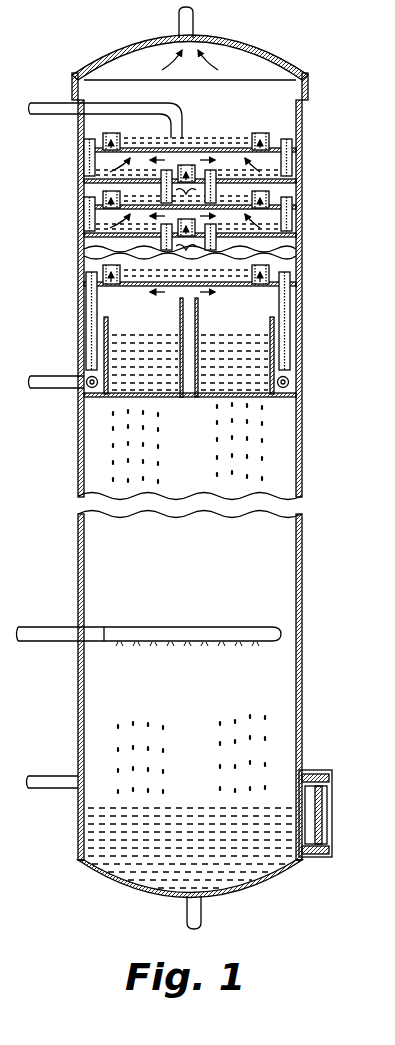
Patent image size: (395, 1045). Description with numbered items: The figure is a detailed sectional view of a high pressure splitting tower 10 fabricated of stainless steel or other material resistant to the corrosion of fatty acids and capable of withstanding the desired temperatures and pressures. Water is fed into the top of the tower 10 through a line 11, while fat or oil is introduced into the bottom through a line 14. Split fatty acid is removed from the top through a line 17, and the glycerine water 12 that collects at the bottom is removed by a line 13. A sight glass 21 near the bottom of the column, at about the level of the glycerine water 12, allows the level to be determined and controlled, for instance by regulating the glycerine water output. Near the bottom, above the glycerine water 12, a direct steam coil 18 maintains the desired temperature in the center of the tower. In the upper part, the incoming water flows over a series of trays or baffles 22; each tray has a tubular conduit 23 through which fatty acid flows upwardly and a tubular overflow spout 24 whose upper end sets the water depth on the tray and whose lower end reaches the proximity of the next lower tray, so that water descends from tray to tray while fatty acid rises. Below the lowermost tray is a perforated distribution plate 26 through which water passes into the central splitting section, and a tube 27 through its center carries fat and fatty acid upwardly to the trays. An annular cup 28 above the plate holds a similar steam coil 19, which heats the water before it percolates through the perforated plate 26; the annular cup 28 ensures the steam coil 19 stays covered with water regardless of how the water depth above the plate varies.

The tower 10 is at (304, 338).
The line 11 is at (54, 102).
The glycerine water 12 is at (110, 805).
The line 13 is at (202, 917).
The line 14 is at (50, 777).
The line 17 is at (195, 20).
The direct steam coil 18 is at (188, 626).
The steam coil 19 is at (290, 382).
The sight glass 21 is at (326, 820).
The trays or baffles 22 is at (297, 181).
The tubular conduit 23 is at (284, 117).
The tubular overflow spout 24 is at (293, 156).
The perforated distribution plate 26 is at (208, 399).
The tube 27 is at (199, 304).
The annular cup 28 is at (134, 310).